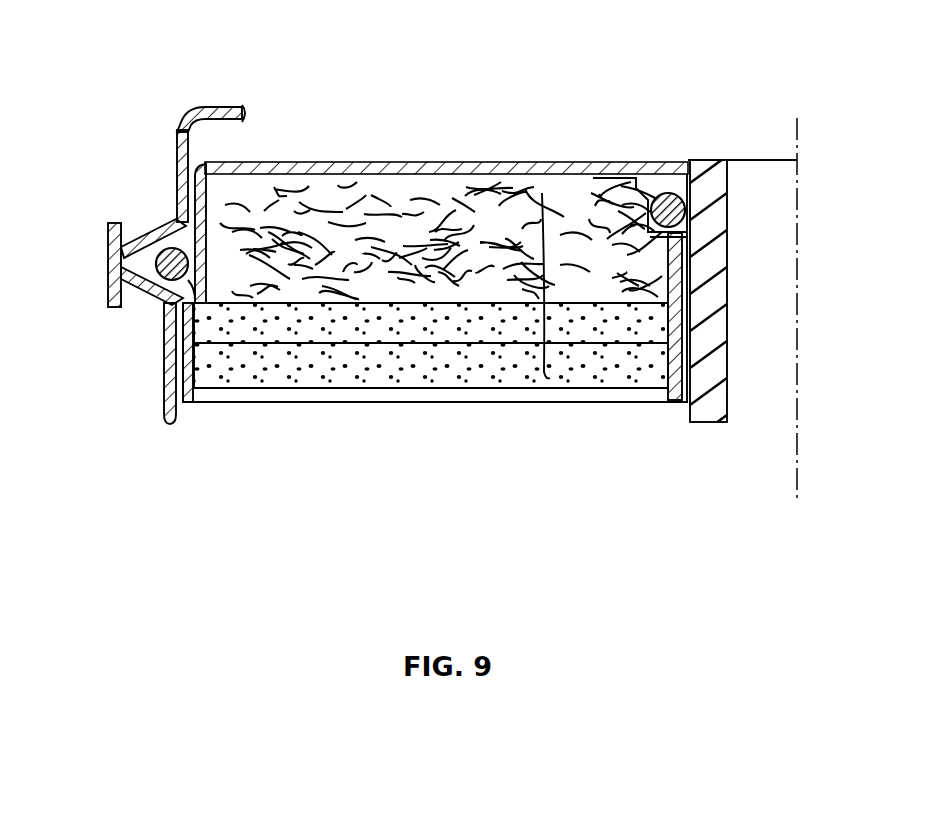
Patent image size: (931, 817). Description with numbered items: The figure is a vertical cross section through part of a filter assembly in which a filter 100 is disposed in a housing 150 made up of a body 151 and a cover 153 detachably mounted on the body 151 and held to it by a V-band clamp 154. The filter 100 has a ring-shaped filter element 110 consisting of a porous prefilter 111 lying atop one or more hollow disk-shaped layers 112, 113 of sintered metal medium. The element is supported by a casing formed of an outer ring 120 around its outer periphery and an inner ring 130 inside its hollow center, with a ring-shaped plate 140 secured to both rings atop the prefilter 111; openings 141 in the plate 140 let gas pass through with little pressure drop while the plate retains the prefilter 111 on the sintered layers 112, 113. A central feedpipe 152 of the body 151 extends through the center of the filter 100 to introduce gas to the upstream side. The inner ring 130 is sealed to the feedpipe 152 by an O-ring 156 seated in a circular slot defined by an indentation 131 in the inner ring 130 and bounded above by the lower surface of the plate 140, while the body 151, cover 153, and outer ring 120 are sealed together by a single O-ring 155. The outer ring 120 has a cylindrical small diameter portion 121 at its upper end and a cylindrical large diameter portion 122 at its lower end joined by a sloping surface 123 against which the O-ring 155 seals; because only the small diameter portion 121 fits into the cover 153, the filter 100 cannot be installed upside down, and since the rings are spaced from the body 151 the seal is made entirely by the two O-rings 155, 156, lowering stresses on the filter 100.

The filter 100 is at (466, 128).
The filter element 110 is at (562, 255).
The porous prefilter 111 is at (372, 200).
The sintered metal layer 112 is at (292, 332).
The sintered metal layer 113 is at (350, 377).
The outer ring 120 is at (183, 402).
The small diameter portion 121 is at (198, 192).
The large diameter portion 122 is at (163, 352).
The sloping surface 123 is at (167, 307).
The inner ring 130 is at (733, 425).
The indentation 131 is at (698, 231).
The ring-shaped plate 140 is at (610, 163).
The openings 141 is at (474, 163).
The housing 150 is at (181, 104).
The body 151 is at (164, 400).
The feedpipe 152 is at (730, 362).
The cover 153 is at (178, 155).
The V-band clamp 154 is at (108, 262).
The O-ring 155 is at (160, 242).
The O-ring 156 is at (667, 193).